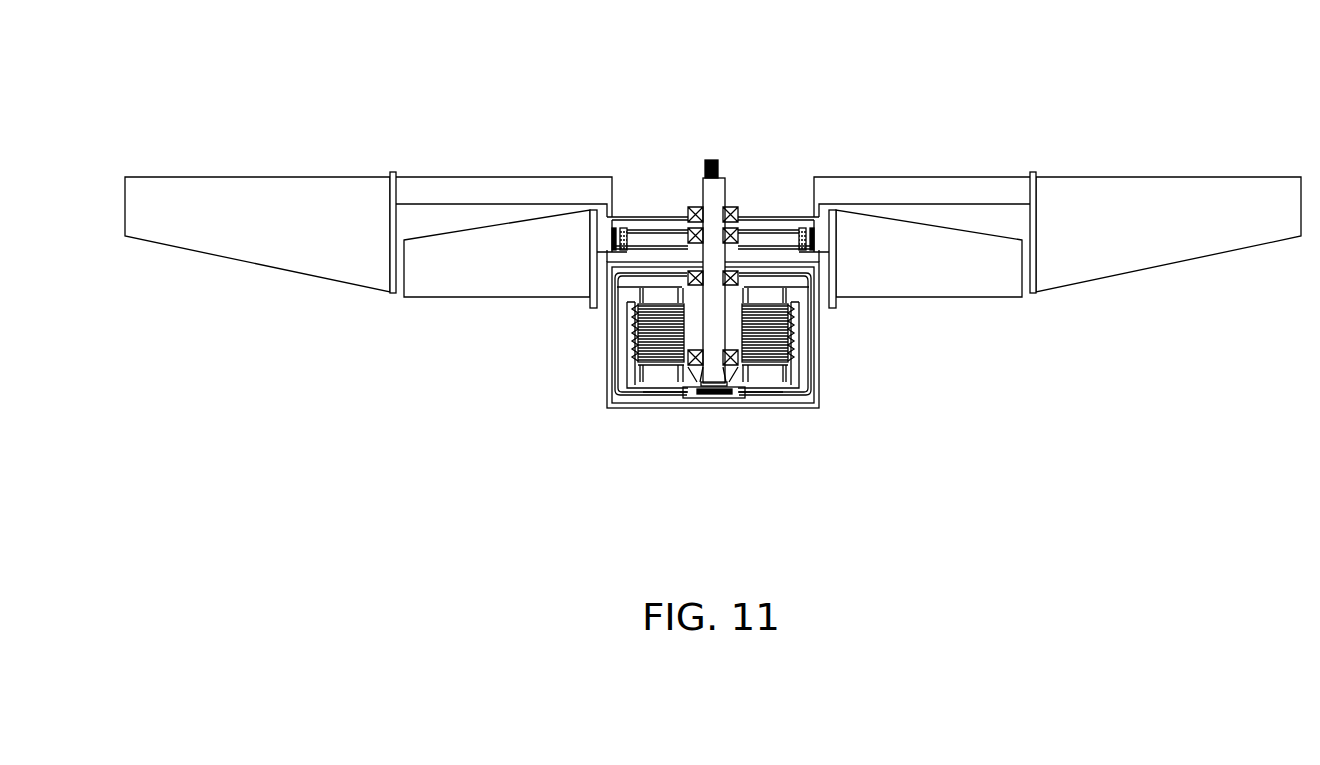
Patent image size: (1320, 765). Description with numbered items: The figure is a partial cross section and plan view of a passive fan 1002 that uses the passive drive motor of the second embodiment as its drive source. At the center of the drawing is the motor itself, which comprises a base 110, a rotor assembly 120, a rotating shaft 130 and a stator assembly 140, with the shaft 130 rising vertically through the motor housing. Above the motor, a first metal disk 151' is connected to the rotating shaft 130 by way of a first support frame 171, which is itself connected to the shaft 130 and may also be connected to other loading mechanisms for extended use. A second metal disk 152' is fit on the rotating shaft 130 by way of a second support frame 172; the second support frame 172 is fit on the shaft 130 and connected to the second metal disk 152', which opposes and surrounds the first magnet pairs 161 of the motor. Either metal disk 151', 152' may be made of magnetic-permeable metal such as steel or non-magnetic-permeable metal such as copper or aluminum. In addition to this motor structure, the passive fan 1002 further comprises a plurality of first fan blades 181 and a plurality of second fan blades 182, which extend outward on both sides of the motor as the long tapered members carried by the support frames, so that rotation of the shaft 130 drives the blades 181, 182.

The passive fan 1002 is at (195, 75).
The base 110 is at (703, 403).
The rotor assembly 120 is at (627, 407).
The rotating shaft 130 is at (718, 377).
The stator assembly 140 is at (763, 368).
The first metal disk 151' is at (763, 310).
The second metal disk 152' is at (856, 188).
The second plate 161 is at (828, 243).
The first support frame 171 is at (612, 252).
The second support frame 172 is at (650, 217).
The first fan blades 181 is at (497, 283).
The second fan blades 182 is at (263, 248).